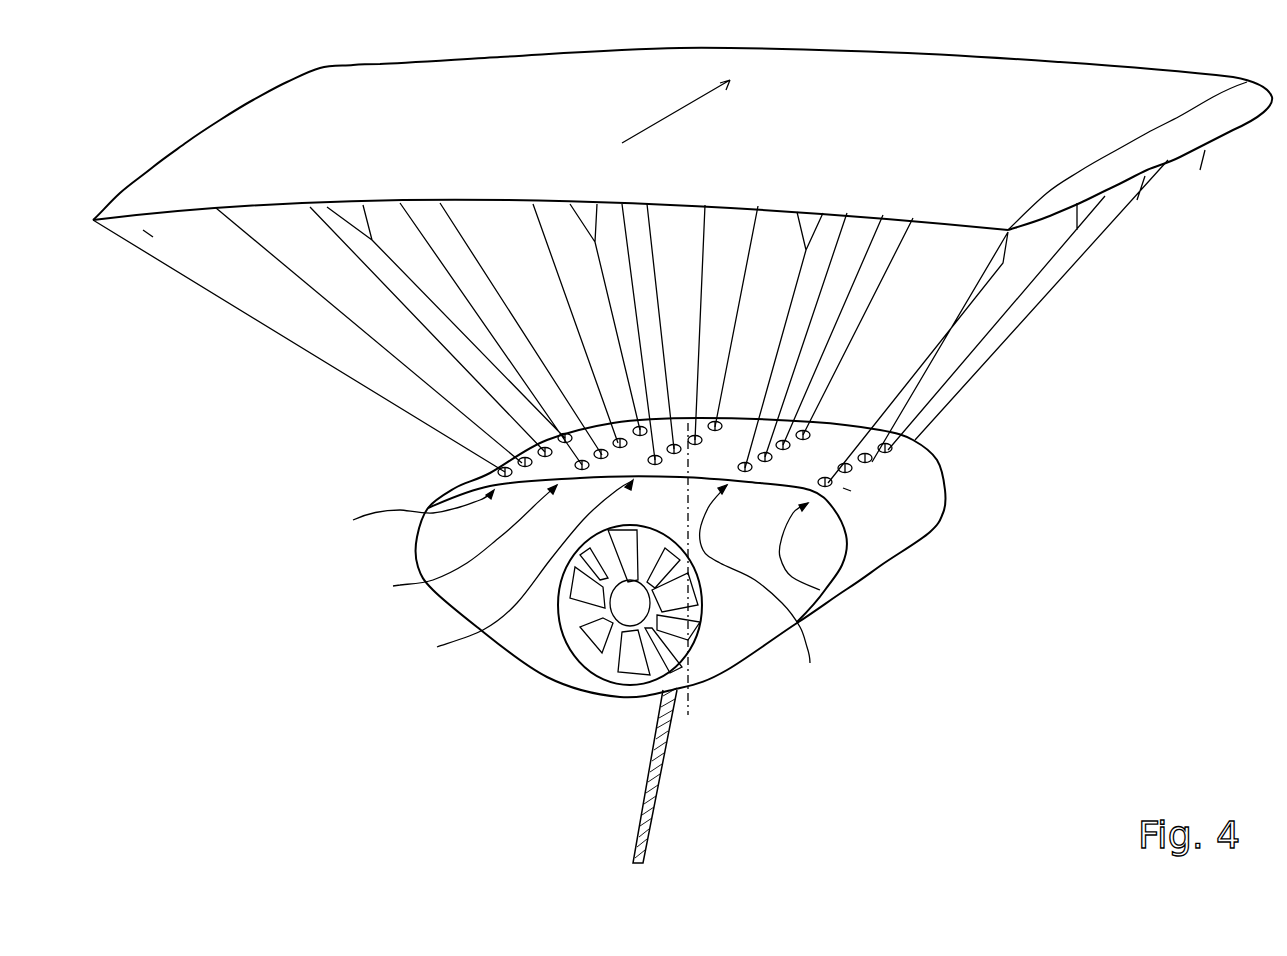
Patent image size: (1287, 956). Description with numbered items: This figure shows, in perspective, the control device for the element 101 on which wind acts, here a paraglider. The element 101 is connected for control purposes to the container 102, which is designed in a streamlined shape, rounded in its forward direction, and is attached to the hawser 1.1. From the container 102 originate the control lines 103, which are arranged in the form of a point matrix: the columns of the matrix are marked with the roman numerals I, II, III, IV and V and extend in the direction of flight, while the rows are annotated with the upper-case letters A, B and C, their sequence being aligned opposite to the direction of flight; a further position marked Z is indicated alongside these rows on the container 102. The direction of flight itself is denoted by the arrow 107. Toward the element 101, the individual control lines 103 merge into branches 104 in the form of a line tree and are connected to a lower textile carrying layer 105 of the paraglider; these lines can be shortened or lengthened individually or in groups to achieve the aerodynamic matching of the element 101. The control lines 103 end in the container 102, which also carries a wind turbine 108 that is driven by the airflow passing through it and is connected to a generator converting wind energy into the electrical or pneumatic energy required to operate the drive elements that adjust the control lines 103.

The element on which wind acts 101 is at (1148, 147).
The container 102 is at (727, 642).
The control lines 103 is at (1037, 317).
The branches 104 is at (125, 237).
The lower textile carrying layer 105 is at (197, 208).
The arrow 107 is at (653, 122).
The wind turbine 108 is at (627, 655).
The hawser 1.1 is at (652, 778).
The row of the control line matrix A is at (897, 453).
The row of the control line matrix B is at (877, 462).
The row of the control line matrix C is at (857, 473).
The zone Z is at (843, 488).
The column of the control line matrix I is at (348, 539).
The column of the control line matrix II is at (383, 601).
The column of the control line matrix III is at (428, 662).
The column of the control line matrix IV is at (841, 702).
The column of the control line matrix V is at (820, 590).